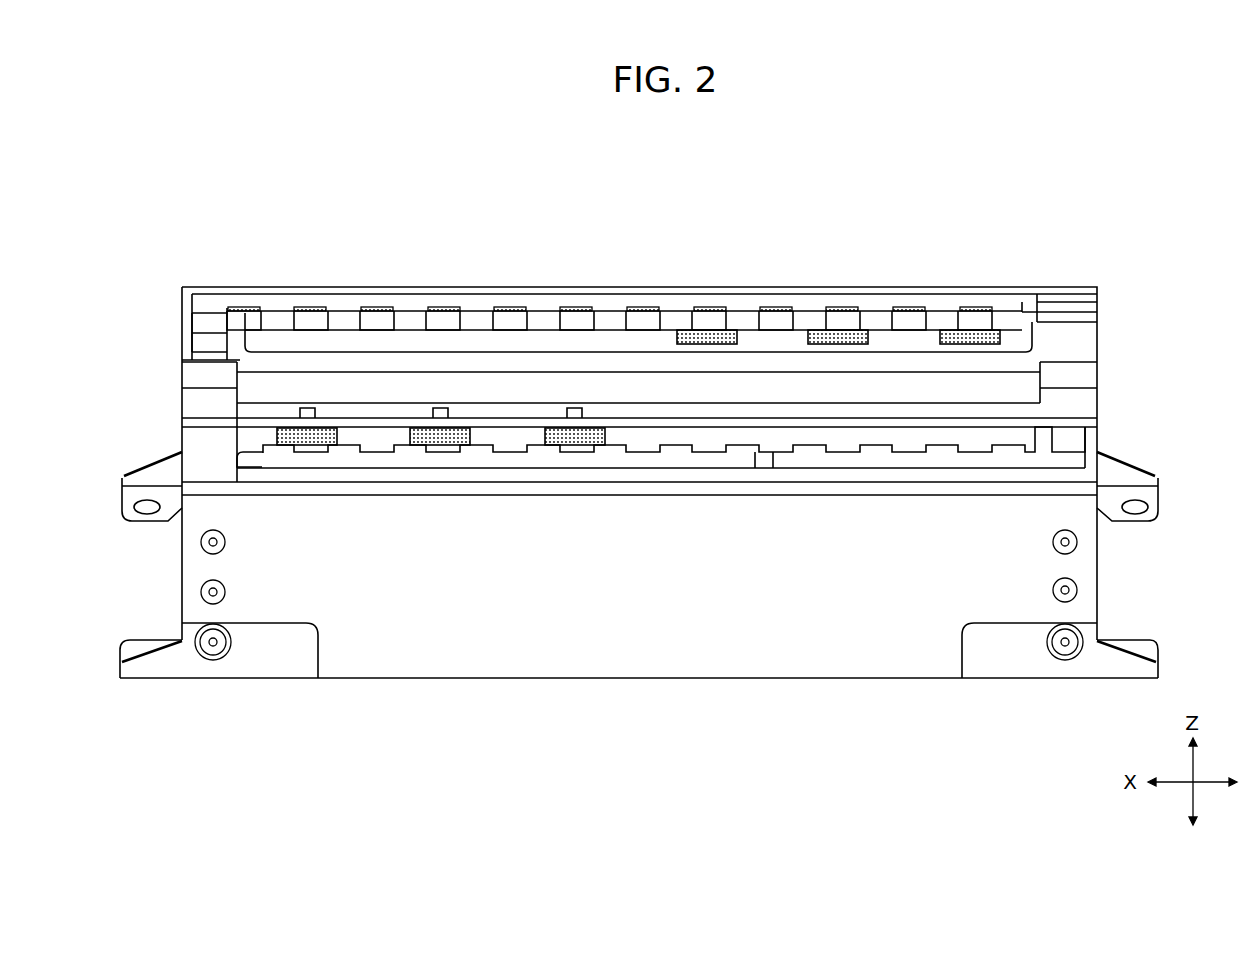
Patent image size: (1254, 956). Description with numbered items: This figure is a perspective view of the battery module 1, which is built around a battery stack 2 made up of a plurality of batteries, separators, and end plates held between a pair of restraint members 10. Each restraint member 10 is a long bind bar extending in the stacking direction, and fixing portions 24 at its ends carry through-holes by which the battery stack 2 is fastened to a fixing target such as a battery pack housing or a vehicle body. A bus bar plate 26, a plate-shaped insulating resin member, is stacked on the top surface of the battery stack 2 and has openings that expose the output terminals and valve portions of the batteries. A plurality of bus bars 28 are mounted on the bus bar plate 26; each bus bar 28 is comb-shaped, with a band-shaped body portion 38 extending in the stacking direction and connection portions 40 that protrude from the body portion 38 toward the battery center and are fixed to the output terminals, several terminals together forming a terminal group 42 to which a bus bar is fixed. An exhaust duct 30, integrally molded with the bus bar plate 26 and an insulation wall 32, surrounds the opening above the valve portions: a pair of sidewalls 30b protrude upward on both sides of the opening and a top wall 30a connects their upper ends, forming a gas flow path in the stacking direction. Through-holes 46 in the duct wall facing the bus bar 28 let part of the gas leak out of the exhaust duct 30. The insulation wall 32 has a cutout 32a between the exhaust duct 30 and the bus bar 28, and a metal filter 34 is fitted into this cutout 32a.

The battery module 1 is at (630, 768).
The battery stack 2 is at (926, 682).
The restraint member 10 is at (1092, 580).
The fixing portion 24 is at (1162, 652).
The bus bar plate 26 is at (1100, 336).
The bus bar 28 is at (200, 295).
The exhaust duct 30 is at (1087, 387).
The top wall 30a is at (1007, 388).
The sidewall 30b is at (1070, 412).
The insulation wall 32 is at (1020, 350).
The cutout 32a is at (589, 455).
The metal filter 34 is at (705, 330).
The body portion 38 is at (354, 315).
The connection portion 40 is at (262, 311).
The terminal group 42 is at (190, 353).
The through-hole 46 is at (300, 409).